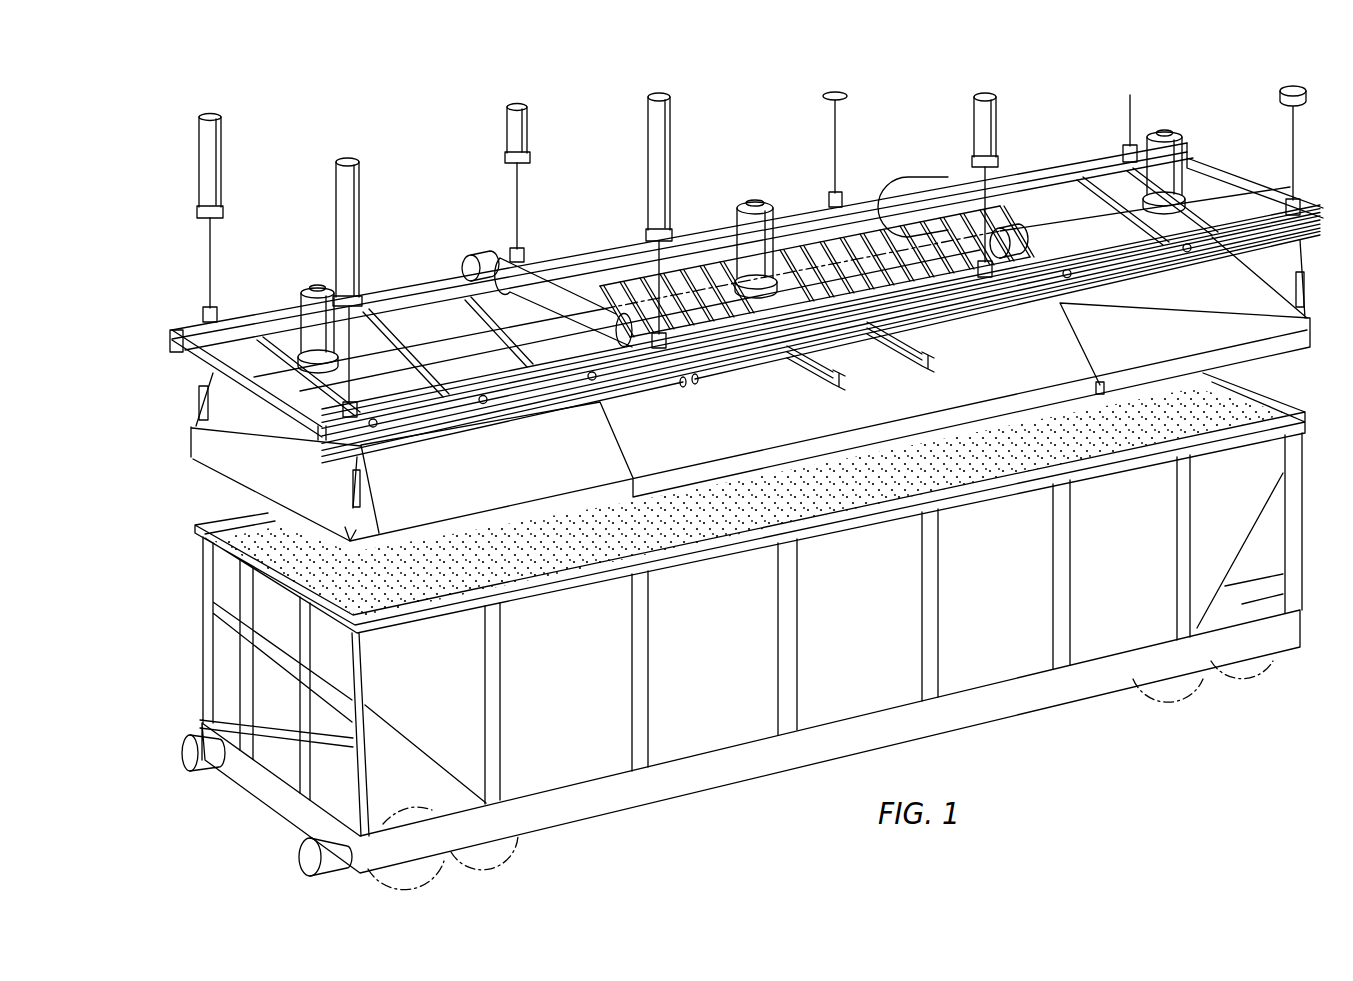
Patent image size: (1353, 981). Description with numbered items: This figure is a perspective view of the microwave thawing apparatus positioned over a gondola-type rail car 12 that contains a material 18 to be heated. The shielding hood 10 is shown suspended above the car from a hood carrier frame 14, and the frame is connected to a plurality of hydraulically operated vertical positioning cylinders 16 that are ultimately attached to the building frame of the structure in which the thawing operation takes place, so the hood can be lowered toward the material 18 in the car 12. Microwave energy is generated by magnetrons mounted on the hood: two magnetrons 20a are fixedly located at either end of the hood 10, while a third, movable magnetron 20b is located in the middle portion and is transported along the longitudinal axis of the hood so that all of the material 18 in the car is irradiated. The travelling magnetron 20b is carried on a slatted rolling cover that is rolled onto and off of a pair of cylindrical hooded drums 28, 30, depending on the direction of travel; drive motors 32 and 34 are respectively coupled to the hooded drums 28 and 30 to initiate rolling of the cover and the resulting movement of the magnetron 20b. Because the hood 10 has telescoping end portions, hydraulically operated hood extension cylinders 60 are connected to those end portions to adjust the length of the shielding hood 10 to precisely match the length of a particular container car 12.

The shielding hood 10 is at (242, 456).
The gondola-type rail car 12 is at (866, 619).
The hood carrier frame 14 is at (1313, 206).
The vertical positioning cylinders 16 is at (363, 189).
The material 18 is at (1036, 432).
The magnetrons 20a is at (303, 290).
The movable magnetron 20b is at (773, 207).
The hooded drum 28 is at (566, 323).
The hooded drum 30 is at (1019, 234).
The drive motor 32 is at (467, 256).
The drive motor 34 is at (922, 178).
The hood extension cylinders 60 is at (767, 360).